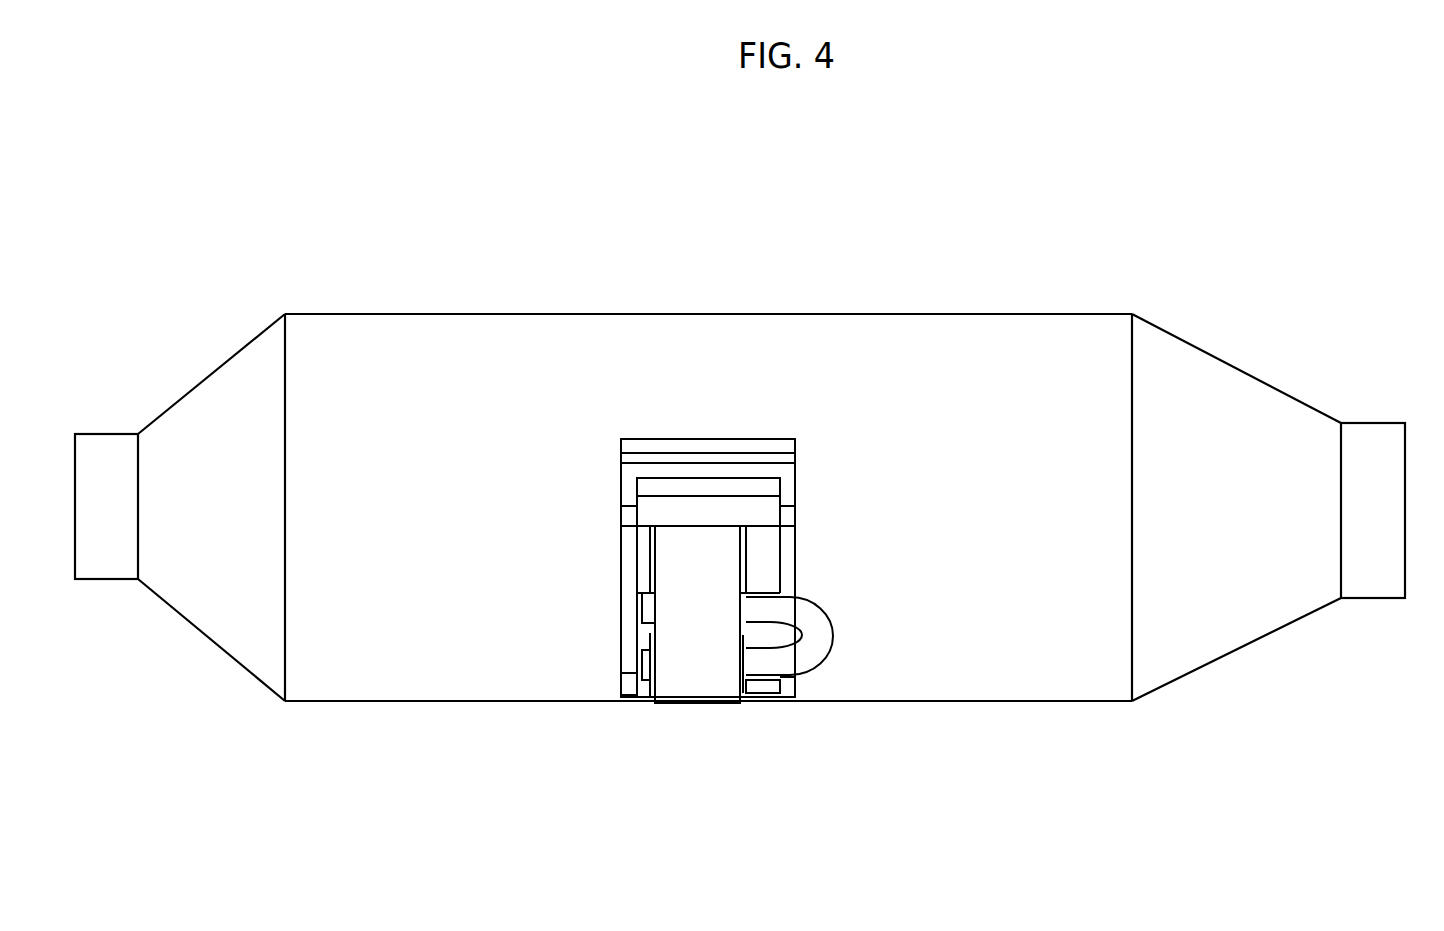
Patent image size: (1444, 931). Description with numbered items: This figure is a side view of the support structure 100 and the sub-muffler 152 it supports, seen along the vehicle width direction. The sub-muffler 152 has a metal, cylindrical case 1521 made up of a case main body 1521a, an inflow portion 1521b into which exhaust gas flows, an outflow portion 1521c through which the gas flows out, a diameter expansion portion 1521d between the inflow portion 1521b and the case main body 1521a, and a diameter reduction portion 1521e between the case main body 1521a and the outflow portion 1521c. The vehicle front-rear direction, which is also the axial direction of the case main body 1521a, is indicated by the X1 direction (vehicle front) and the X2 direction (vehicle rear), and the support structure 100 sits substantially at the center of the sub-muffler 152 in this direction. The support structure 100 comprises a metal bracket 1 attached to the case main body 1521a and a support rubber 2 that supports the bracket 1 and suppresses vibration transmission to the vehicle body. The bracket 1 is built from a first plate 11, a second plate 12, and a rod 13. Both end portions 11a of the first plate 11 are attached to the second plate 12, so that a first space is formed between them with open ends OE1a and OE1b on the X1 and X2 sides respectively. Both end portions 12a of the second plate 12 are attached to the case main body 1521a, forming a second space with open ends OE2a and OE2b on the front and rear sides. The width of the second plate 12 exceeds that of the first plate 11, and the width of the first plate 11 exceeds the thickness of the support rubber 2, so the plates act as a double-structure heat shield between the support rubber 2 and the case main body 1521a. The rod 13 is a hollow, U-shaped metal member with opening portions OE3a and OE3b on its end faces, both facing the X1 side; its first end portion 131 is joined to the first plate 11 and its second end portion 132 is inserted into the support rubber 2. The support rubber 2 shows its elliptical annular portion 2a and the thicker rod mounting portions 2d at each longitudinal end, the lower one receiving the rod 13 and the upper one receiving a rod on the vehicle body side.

The case 1521 is at (750, 449).
The sub-muffler 152 is at (750, 449).
The case main body 1521a is at (807, 313).
The inflow portion 1521b is at (105, 433).
The outflow portion 1521c is at (1380, 422).
The diameter expansion portion 1521d is at (241, 349).
The diameter reduction portion 1521e is at (1225, 362).
The support structure 100 is at (722, 587).
The bracket 1 is at (709, 570).
The support rubber 2 is at (687, 629).
The annular portion 2a is at (727, 690).
The rod mounting portion 2d is at (652, 543).
The first plate 11 is at (753, 534).
The end portions of first plate 11a is at (661, 487).
The second plate 12 is at (714, 448).
The end portions of second plate 12a is at (777, 447).
The rod 13 is at (790, 657).
The first end portion 131 is at (650, 614).
The second end portion 132 is at (647, 683).
The open end OE1a is at (609, 568).
The open end OE1b is at (798, 577).
The open end OE2a is at (606, 542).
The open end OE2b is at (811, 540).
The opening portion OE3a is at (626, 607).
The opening portion OE3b is at (626, 660).
The X1 direction X1 is at (1180, 804).
The X2 direction X2 is at (1280, 804).